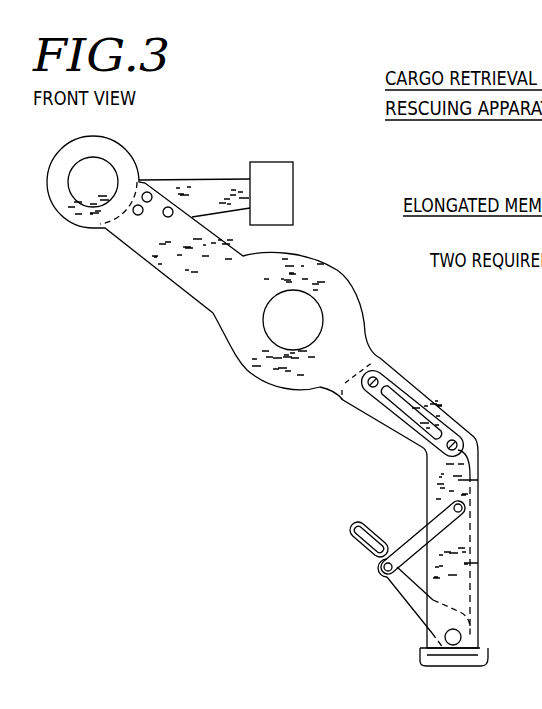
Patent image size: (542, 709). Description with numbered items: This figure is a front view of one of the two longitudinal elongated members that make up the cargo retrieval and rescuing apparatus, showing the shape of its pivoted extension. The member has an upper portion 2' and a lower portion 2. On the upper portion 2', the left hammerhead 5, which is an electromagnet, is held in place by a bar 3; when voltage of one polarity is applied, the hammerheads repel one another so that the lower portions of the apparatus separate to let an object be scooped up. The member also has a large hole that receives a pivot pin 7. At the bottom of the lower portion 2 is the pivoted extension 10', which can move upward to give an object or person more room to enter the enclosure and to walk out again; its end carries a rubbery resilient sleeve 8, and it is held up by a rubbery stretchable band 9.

The upper portion 2' is at (262, 392).
The lower portion 2 is at (425, 518).
The bar 3 is at (210, 180).
The left hammerhead 5 is at (268, 162).
The pivot pin 7 is at (462, 639).
The rubbery resilient sleeve 8 is at (350, 528).
The rubbery stretchable band 9 is at (415, 537).
The pivoted extension 10' is at (392, 608).